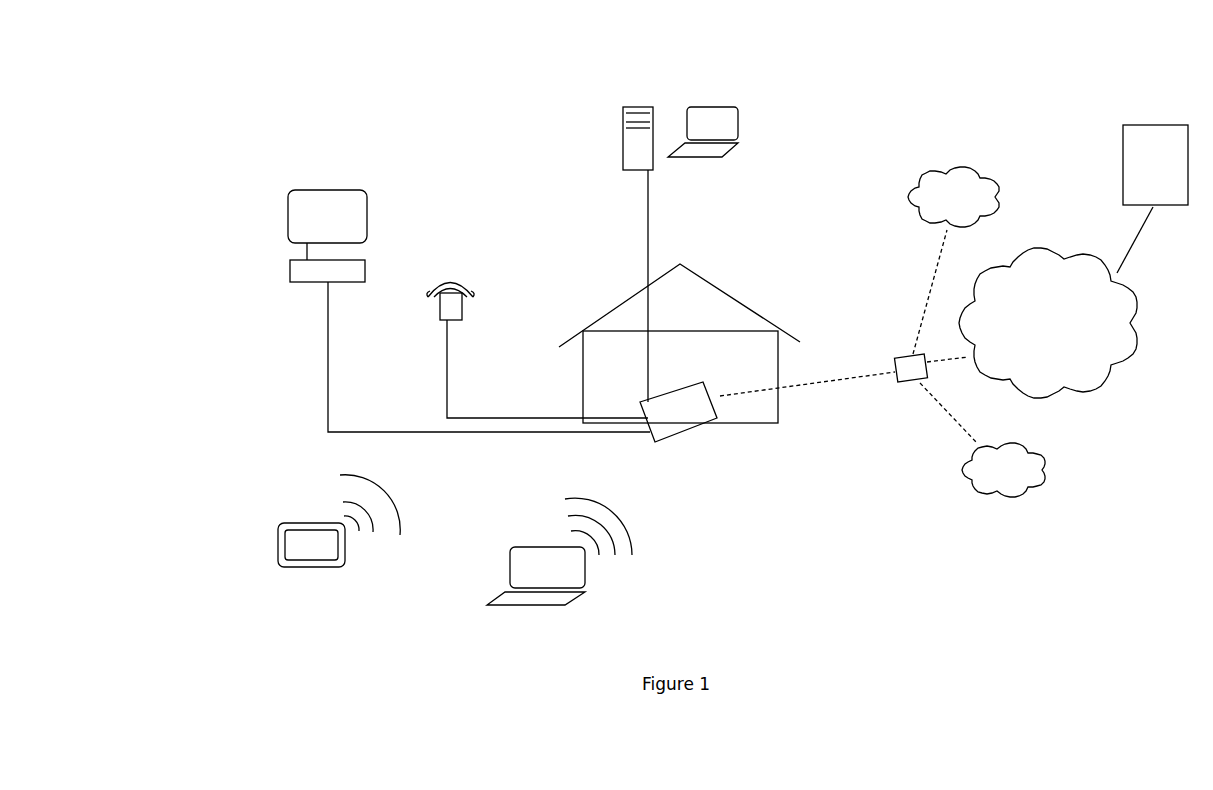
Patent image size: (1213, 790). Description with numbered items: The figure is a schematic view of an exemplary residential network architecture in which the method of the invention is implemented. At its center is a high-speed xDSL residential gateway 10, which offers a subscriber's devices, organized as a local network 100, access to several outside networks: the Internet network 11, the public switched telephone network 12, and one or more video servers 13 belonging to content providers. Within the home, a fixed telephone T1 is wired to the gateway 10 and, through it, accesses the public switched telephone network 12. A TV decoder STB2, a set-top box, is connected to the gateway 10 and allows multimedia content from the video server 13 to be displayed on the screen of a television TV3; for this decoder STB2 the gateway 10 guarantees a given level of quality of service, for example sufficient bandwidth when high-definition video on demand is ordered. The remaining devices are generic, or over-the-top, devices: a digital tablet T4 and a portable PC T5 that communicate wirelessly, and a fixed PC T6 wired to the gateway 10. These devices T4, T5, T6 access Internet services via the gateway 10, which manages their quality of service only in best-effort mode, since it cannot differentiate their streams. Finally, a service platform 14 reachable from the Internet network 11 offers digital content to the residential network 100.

The local network 100 is at (421, 92).
The television TV3 is at (288, 214).
The TV decoder STB2 is at (290, 285).
The fixed telephone T1 is at (440, 318).
The fixed PC T6 is at (625, 174).
The xDSL gateway 10 is at (700, 420).
The video server 13 is at (1002, 176).
The Internet network 11 is at (1140, 322).
The service platform 14 is at (1189, 150).
The public switched telephone network 12 is at (1052, 466).
The digital tablet T4 is at (288, 567).
The portable PC T5 is at (490, 606).